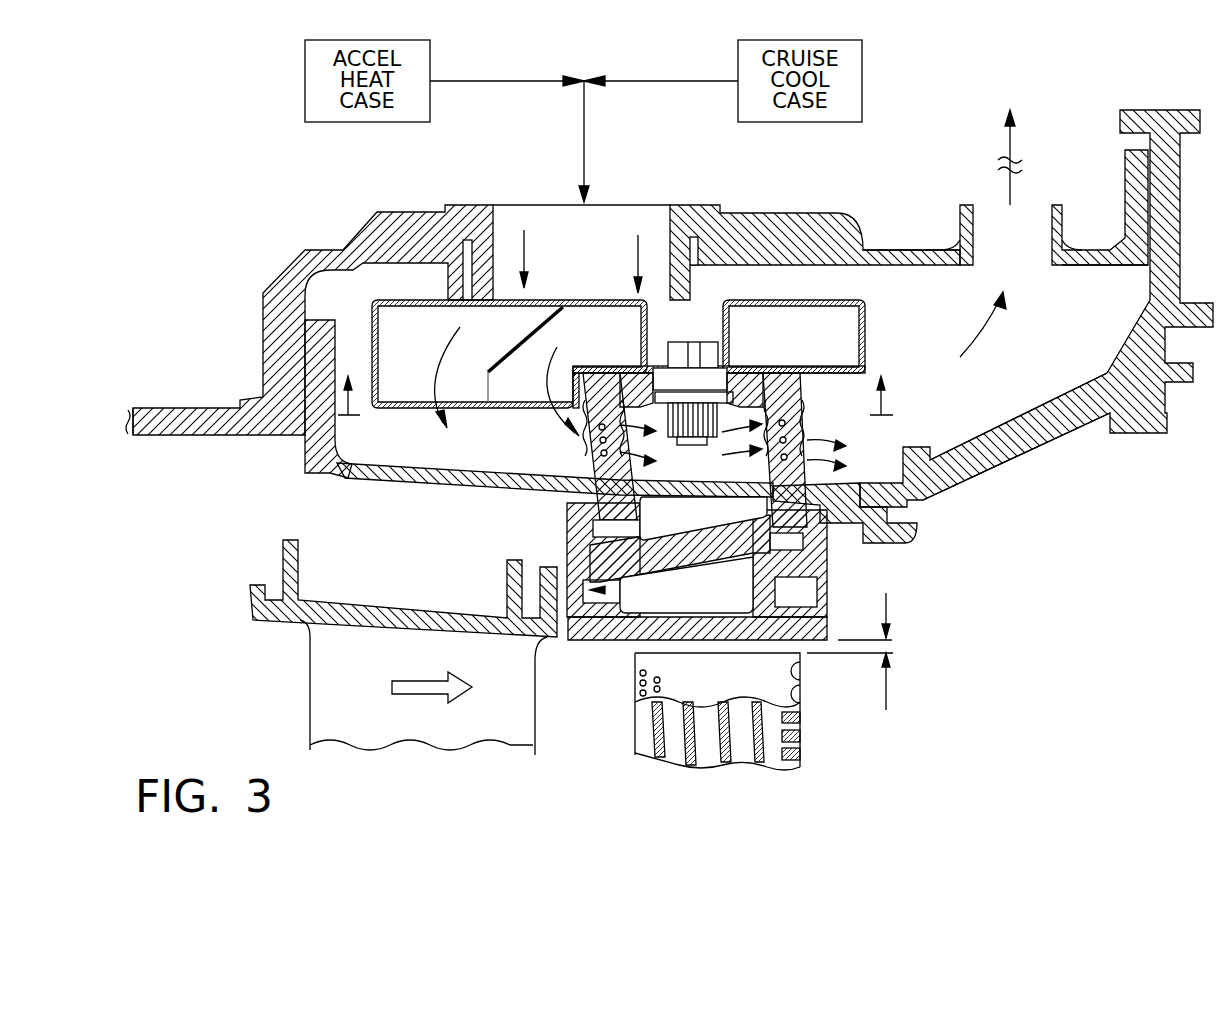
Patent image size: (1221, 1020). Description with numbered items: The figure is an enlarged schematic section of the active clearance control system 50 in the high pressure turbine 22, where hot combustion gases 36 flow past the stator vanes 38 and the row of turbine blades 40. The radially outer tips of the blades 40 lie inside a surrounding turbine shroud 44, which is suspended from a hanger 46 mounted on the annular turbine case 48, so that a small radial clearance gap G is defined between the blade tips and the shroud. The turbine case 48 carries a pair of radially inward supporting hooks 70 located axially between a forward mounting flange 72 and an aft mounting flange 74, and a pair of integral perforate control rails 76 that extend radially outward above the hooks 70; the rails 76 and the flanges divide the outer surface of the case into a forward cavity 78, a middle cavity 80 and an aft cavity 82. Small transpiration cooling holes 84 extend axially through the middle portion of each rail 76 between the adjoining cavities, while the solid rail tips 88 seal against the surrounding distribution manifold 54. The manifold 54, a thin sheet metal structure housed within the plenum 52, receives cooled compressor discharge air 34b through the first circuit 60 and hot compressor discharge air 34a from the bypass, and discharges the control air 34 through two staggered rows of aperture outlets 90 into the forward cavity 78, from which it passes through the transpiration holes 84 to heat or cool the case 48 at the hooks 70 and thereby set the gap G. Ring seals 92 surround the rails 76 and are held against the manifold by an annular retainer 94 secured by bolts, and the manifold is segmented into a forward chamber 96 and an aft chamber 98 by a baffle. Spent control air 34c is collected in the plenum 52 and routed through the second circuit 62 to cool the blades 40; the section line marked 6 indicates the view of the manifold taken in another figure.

The high pressure turbine 22 is at (230, 495).
The pressurized control air 34 is at (638, 250).
The hot compressor discharge air 34a is at (505, 80).
The cooled compressor discharge air 34b is at (662, 80).
The spent control air 34c is at (990, 337).
The hot combustion gases 36 is at (410, 682).
The stator vanes 38 is at (484, 671).
The turbine blades 40 is at (700, 684).
The turbine shroud 44 is at (672, 612).
The hanger 46 is at (665, 545).
The turbine case 48 is at (945, 445).
The active clearance control system 50 is at (798, 180).
The plenum 52 is at (1057, 312).
The distribution manifold 54 is at (850, 287).
The first circuit 60 is at (584, 110).
The second circuit 62 is at (1012, 185).
The supporting hooks 70 is at (815, 540).
The forward mounting flange 72 is at (305, 370).
The aft mounting flange 74 is at (1170, 268).
The control rails 76 is at (783, 390).
The forward cavity 78 is at (517, 459).
The middle cavity 80 is at (680, 473).
The aft cavity 82 is at (857, 466).
The transpiration cooling holes 84 is at (583, 402).
The rail tips 88 is at (806, 396).
The aperture outlets 90 is at (425, 412).
The ring seals 92 is at (748, 367).
The retainer 94 is at (700, 390).
The forward chamber 96 is at (393, 346).
The aft chamber 98 is at (499, 390).
The radial clearance gap G is at (887, 700).
The section line 6 is at (615, 373).